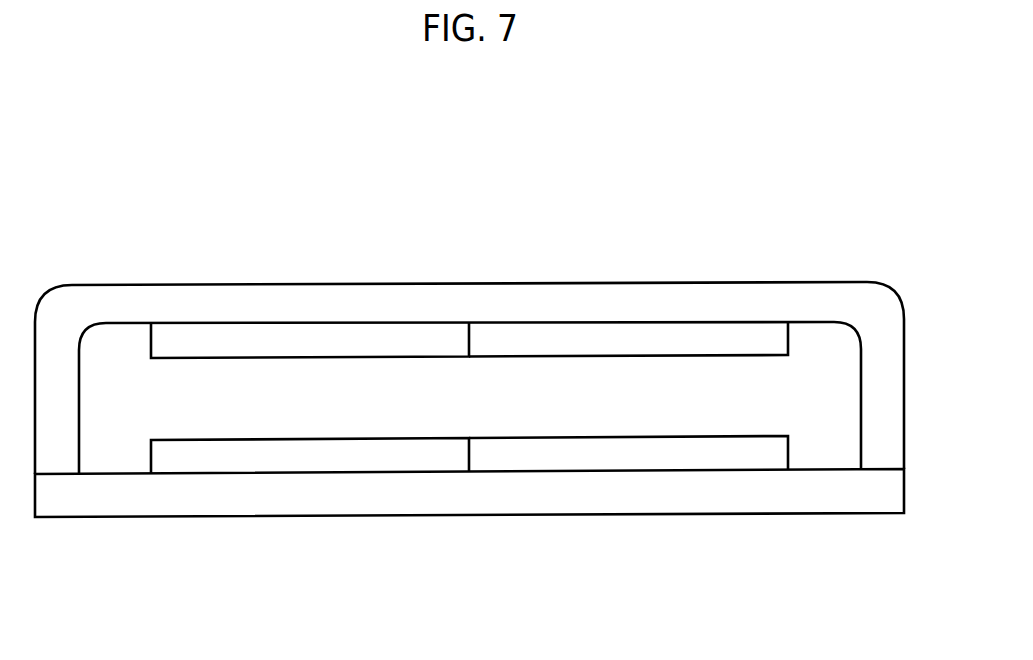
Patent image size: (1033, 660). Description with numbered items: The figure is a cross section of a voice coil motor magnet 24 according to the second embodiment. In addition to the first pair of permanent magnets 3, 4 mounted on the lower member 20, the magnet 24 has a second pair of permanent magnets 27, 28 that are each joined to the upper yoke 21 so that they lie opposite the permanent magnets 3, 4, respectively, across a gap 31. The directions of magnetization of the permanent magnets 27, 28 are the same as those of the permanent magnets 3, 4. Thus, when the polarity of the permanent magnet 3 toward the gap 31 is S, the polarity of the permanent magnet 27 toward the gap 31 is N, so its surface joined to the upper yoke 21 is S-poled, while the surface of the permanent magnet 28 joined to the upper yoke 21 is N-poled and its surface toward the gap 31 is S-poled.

The voice coil motor magnet 24 is at (469, 357).
The upper yoke 21 is at (413, 310).
The substrate 20 is at (435, 498).
The permanent magnet 27 is at (262, 338).
The permanent magnet 28 is at (602, 338).
The permanent magnet 3 is at (268, 458).
The permanent magnet 4 is at (595, 460).
The gap 31 is at (663, 395).